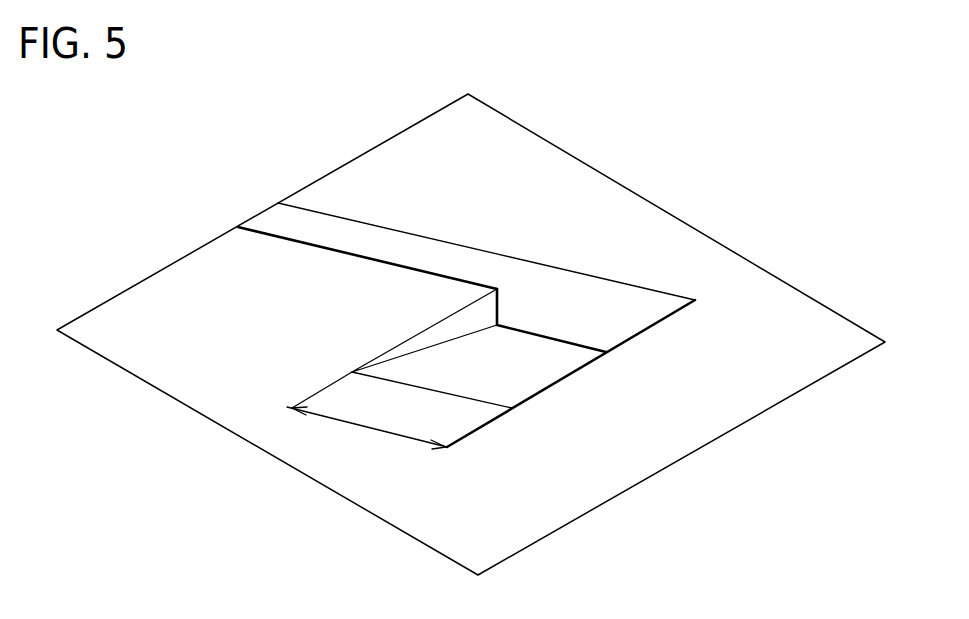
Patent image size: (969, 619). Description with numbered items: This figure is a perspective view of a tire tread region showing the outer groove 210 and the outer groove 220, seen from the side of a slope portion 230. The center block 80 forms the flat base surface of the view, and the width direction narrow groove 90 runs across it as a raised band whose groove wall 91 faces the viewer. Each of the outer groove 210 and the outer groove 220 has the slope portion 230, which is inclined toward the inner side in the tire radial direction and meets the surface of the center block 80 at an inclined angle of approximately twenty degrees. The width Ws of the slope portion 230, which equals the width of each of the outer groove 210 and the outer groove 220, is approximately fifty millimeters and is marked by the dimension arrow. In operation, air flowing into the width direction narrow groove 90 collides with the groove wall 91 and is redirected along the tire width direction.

The center block 80 is at (535, 507).
The width direction narrow groove 90 is at (403, 248).
The groove wall 91 is at (570, 312).
The outer groove 210 is at (645, 386).
The outer groove 220 is at (590, 378).
The slope portion 230 is at (450, 360).
The width of the slope portion Ws is at (353, 423).